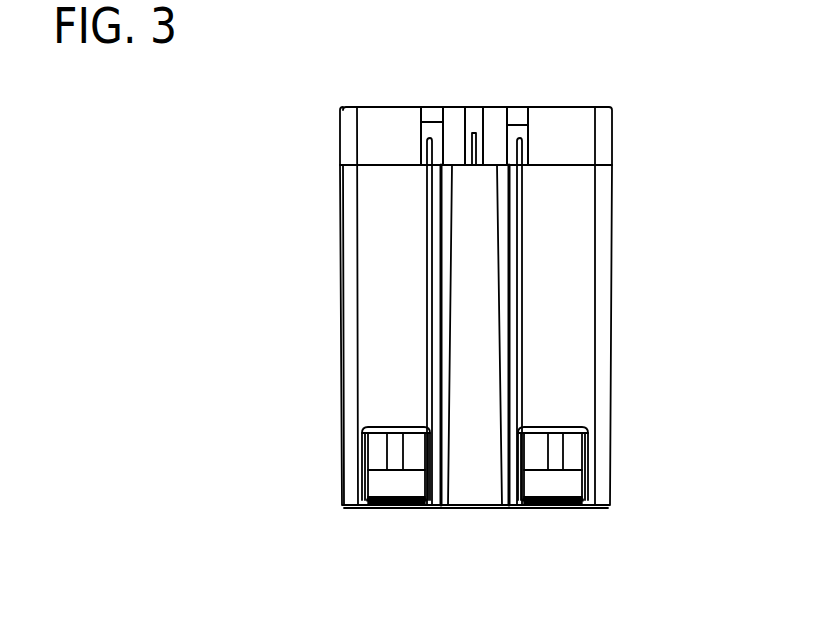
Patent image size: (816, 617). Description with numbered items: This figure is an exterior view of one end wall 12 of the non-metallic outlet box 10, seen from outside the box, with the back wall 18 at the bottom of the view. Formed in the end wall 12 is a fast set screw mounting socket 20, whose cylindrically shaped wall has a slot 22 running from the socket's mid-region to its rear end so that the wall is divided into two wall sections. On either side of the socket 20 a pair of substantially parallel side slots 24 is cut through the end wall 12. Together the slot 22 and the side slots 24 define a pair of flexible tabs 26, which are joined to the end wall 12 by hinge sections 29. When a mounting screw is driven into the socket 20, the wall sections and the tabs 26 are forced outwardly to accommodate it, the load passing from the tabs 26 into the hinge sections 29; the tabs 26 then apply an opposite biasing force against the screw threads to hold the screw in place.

The non-metallic outlet box 10 is at (156, 279).
The end wall 12 is at (392, 387).
The back wall 18 is at (522, 507).
The fast set screw mounting socket 20 is at (468, 108).
The slot 22 is at (472, 140).
The side slots 24 is at (437, 125).
The flexible tabs 26 is at (455, 167).
The hinge sections 29 is at (428, 125).